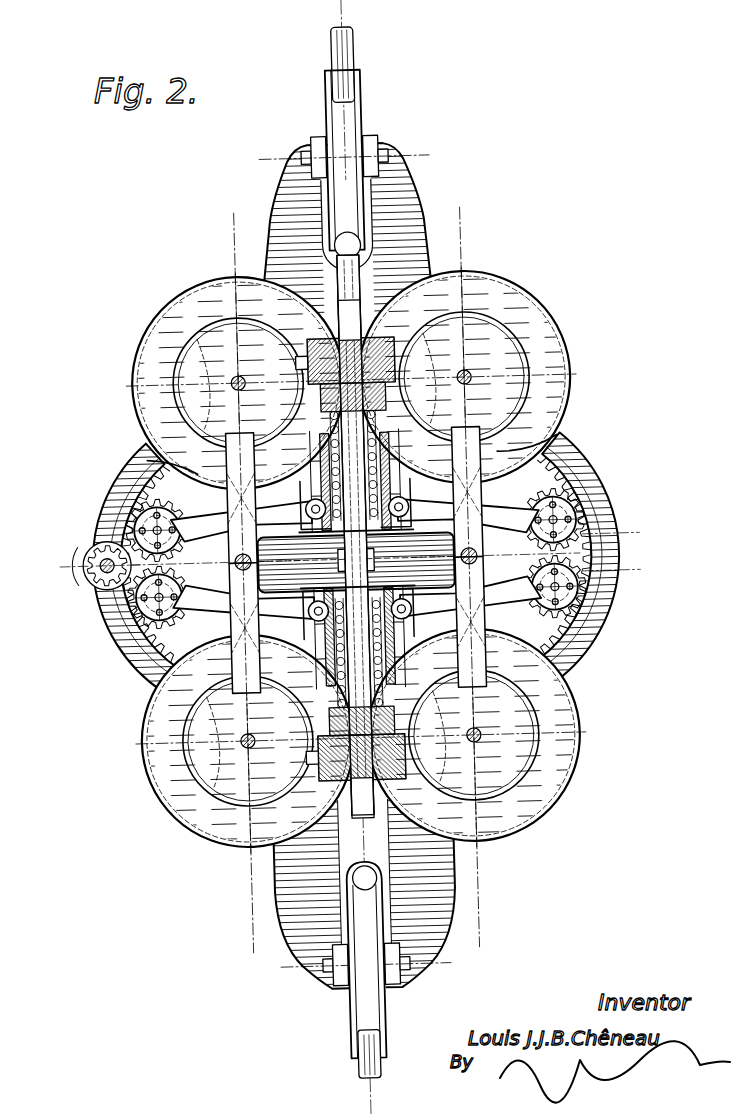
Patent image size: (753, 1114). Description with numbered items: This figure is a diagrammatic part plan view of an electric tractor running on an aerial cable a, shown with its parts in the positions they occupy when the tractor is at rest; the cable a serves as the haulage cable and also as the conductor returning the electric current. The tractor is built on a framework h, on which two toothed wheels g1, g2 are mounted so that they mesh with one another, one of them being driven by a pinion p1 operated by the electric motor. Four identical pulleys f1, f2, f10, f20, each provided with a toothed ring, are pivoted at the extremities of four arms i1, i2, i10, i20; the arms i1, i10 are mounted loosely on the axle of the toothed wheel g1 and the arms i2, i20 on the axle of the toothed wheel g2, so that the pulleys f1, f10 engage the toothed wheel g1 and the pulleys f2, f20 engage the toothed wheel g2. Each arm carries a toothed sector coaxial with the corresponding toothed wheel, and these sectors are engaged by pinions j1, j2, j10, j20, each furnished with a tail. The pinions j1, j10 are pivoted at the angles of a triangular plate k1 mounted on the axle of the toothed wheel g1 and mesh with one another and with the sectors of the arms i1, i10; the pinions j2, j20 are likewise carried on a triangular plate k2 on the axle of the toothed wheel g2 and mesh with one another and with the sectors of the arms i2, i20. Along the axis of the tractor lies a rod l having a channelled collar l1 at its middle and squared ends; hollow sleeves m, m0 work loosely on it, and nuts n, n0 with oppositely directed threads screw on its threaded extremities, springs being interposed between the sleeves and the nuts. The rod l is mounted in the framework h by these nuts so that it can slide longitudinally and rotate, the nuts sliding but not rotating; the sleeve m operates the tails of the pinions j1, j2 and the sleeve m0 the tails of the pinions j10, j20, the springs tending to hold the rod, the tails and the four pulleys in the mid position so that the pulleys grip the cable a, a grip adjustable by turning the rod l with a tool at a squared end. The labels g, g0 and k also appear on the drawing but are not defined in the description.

The cable a is at (367, 62).
The upper tube g is at (338, 108).
The framework h is at (429, 184).
The pulley f1 is at (190, 288).
The pulley f2 is at (522, 288).
The pulley f10 is at (190, 830).
The pulley f20 is at (561, 791).
The central cross bar k is at (305, 334).
The triangular plate k1 is at (212, 605).
The triangular plate k2 is at (560, 675).
The nut n is at (401, 345).
The nut n0 is at (400, 785).
The toothed wheel g1 is at (162, 465).
The toothed wheel g2 is at (533, 429).
The arm i1 is at (236, 490).
The arm i2 is at (484, 490).
The arm i10 is at (205, 722).
The arm i20 is at (478, 700).
The pinion j1 is at (167, 476).
The pinion j2 is at (566, 500).
The pinion j10 is at (133, 655).
The pinion j20 is at (604, 591).
The channelled collar l1 is at (334, 445).
The rod l is at (334, 685).
The hollow sleeve m is at (383, 445).
The hollow sleeve m0 is at (383, 672).
The pinion p1 is at (95, 554).
The lower tube g0 is at (338, 1012).